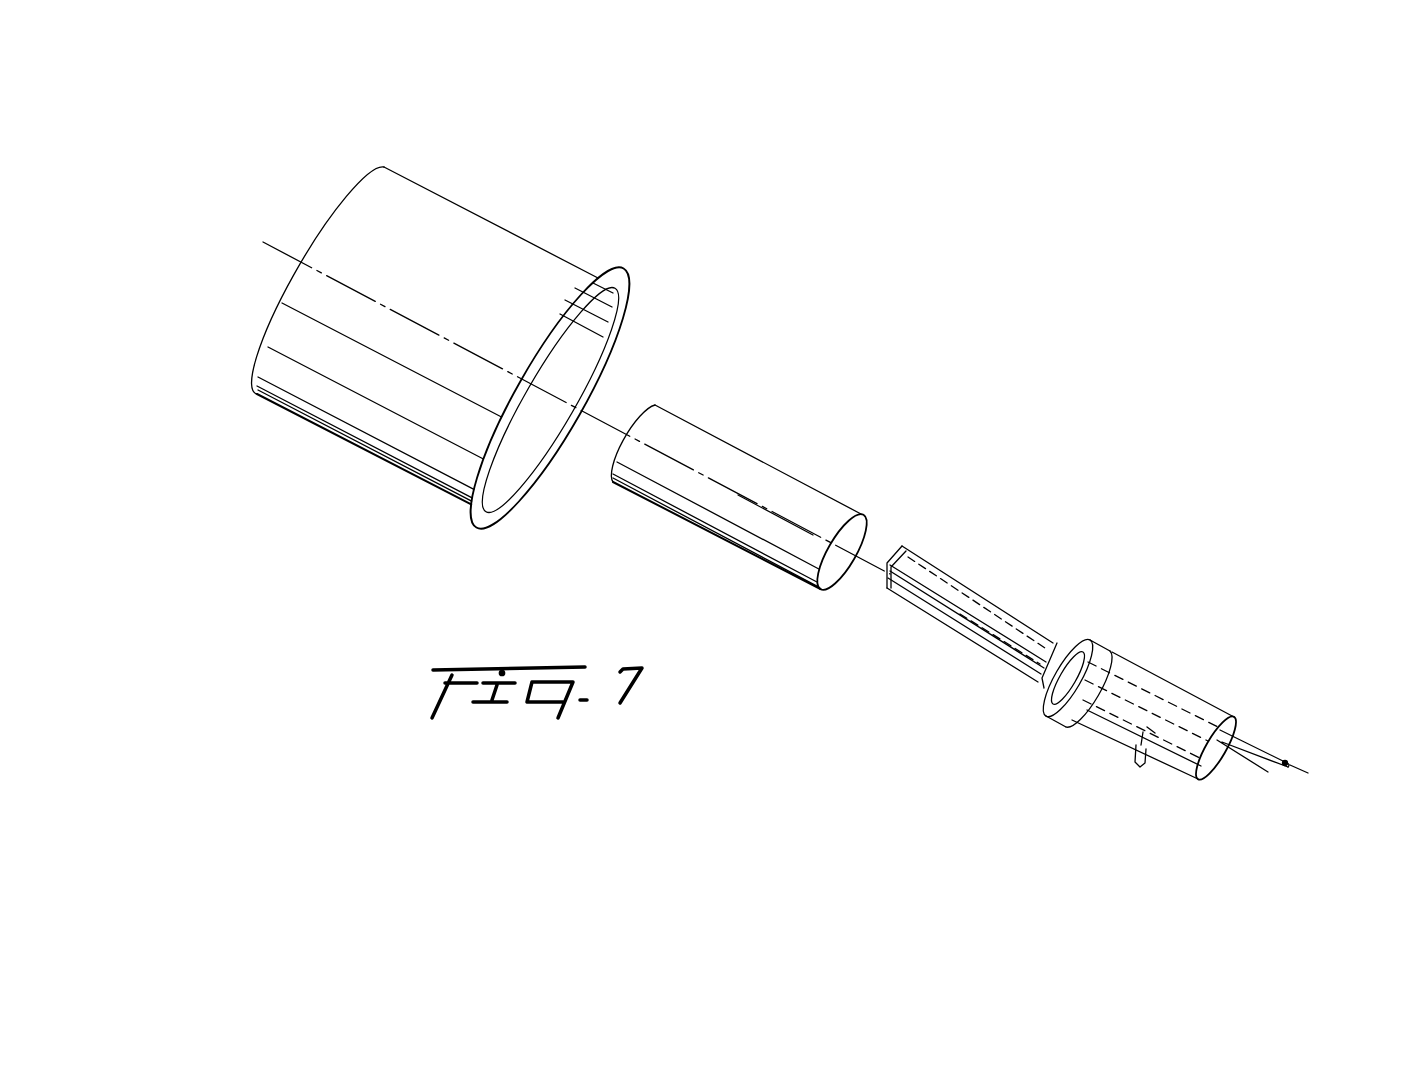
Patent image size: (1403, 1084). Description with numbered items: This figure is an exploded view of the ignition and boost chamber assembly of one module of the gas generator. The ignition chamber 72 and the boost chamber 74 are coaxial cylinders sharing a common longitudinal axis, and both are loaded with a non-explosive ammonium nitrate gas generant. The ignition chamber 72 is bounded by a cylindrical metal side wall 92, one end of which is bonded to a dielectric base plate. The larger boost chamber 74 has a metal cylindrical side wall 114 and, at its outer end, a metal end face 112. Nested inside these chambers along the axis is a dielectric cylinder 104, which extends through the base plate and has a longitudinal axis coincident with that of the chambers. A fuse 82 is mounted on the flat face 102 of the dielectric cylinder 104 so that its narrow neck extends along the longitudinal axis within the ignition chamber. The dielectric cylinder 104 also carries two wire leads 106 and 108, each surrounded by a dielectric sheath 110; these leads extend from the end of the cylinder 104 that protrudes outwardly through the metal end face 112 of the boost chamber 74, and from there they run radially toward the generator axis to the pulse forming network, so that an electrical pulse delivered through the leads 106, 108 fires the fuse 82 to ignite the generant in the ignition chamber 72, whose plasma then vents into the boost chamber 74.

The ignition chamber 72 is at (734, 477).
The boost chamber 74 is at (487, 312).
The fuse 82 is at (948, 612).
The cylindrical metal side wall 92 is at (744, 535).
The flat face 102 is at (1013, 658).
The dielectric cylinder 104 is at (1064, 618).
The wire lead 106 is at (1138, 767).
The wire lead 108 is at (1305, 774).
The dielectric sheath 110 is at (1262, 744).
The metal end face 112 is at (485, 522).
The metal cylindrical side wall 114 is at (521, 255).